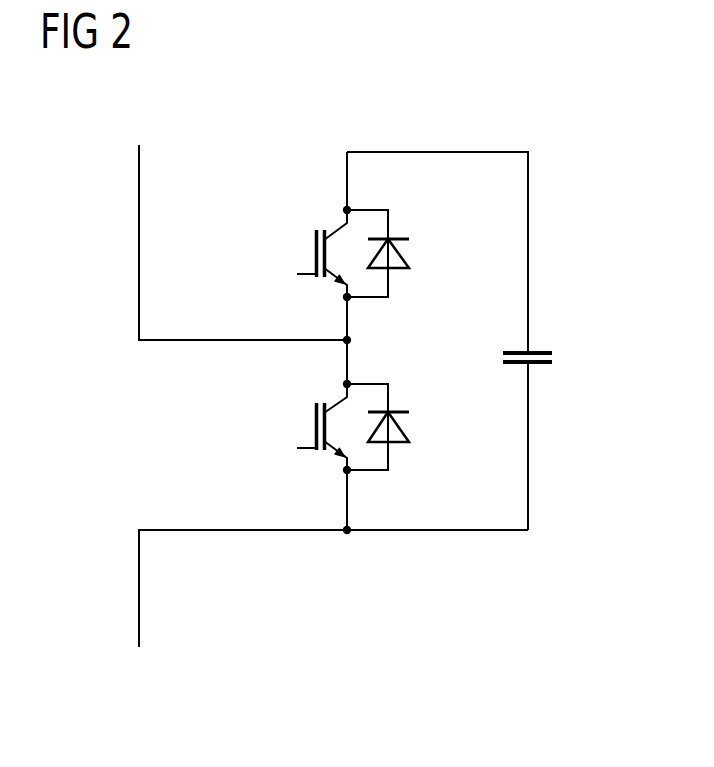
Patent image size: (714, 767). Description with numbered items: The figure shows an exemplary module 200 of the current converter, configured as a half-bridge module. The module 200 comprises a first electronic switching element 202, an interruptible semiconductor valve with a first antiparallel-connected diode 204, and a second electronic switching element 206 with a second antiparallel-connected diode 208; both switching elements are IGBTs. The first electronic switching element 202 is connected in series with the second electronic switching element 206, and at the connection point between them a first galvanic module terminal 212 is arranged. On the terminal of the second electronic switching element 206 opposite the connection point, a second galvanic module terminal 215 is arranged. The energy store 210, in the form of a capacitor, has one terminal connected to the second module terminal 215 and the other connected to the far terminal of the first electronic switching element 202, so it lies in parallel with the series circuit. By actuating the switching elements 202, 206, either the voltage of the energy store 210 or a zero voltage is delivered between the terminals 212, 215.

The module 200 is at (541, 97).
The first electronic switching element 202 is at (316, 240).
The first antiparallel-connected diode 204 is at (400, 250).
The second electronic switching element 206 is at (316, 415).
The second antiparallel-connected diode 208 is at (400, 428).
The energy store 210 is at (537, 350).
The first galvanic module terminal 212 is at (139, 197).
The second galvanic module terminal 215 is at (139, 580).